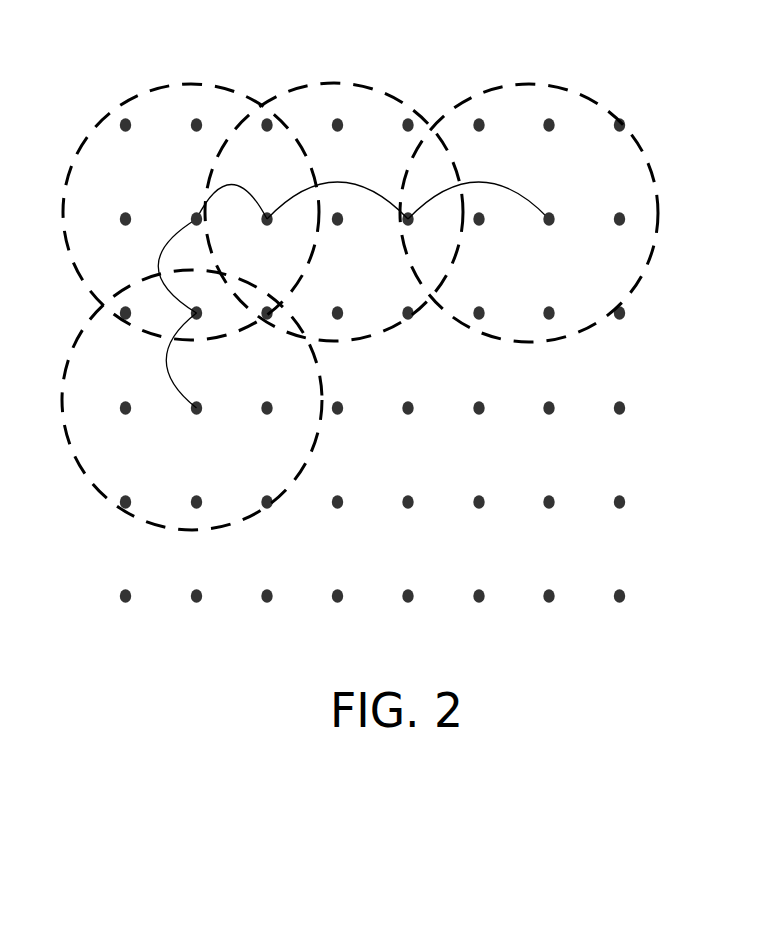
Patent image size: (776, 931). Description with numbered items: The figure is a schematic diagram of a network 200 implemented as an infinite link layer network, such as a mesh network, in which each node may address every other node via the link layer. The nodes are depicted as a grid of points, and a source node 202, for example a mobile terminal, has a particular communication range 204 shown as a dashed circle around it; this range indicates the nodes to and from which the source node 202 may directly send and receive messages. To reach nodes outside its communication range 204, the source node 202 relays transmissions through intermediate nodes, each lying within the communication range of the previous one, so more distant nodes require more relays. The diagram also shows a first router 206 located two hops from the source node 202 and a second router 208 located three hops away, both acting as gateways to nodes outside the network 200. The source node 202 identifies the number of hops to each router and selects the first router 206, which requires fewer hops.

The network 200 is at (753, 32).
The source node 202 is at (159, 203).
The communication range 204 is at (185, 205).
The first router 206 is at (192, 400).
The second router 208 is at (589, 203).